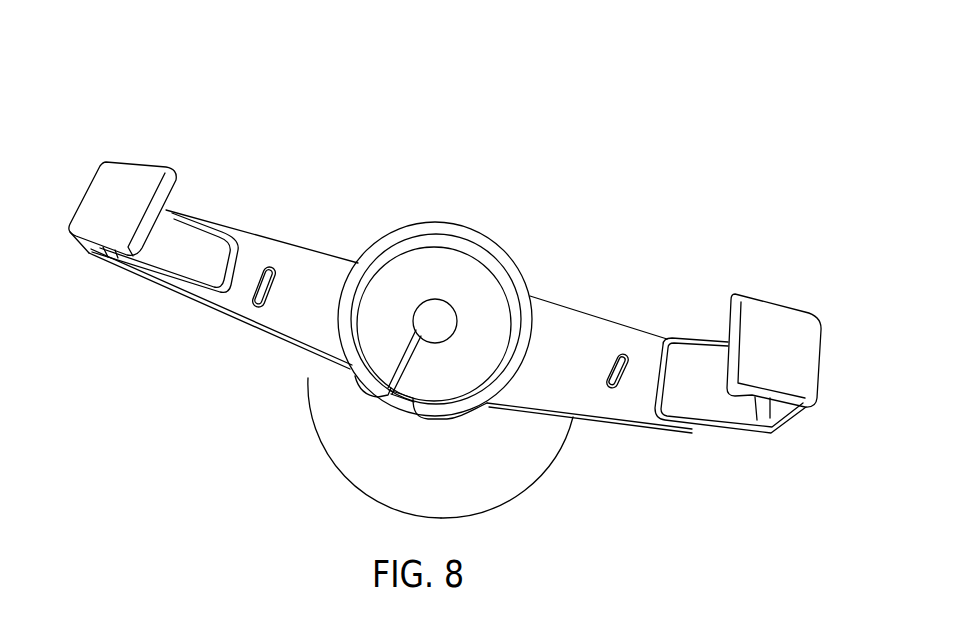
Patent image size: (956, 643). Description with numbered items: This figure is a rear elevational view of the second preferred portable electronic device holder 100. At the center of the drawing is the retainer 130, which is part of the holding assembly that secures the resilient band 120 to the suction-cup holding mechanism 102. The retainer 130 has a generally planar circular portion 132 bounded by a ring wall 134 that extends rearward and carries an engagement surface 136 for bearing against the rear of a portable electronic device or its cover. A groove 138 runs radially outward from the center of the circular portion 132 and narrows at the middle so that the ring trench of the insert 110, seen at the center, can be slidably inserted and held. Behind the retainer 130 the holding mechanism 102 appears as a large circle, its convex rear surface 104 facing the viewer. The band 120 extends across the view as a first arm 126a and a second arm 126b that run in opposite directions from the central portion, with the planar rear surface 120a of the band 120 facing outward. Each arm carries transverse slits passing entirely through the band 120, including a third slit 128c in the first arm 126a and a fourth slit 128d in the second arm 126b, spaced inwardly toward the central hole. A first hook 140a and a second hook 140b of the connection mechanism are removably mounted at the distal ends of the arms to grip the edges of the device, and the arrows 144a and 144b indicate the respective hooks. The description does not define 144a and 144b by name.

The portable electronic device holder 100 is at (288, 103).
The holding mechanism 102 is at (502, 487).
The convex rear surface 104 is at (348, 463).
The insert 110 is at (437, 328).
The band 120 is at (550, 317).
The rear surface 120a is at (585, 402).
The first arm 126a is at (288, 251).
The second arm 126b is at (603, 335).
The third slit 128c is at (261, 303).
The fourth slit 128d is at (618, 380).
The retainer 130 is at (376, 223).
The circular portion 132 is at (437, 265).
The ring wall 134 is at (522, 265).
The engagement surface 136 is at (481, 242).
The groove 138 is at (390, 398).
The first hook 140a is at (87, 193).
The second hook 140b is at (821, 343).
The first clip engagement direction 144a is at (149, 133).
The second clip engagement direction 144b is at (784, 265).